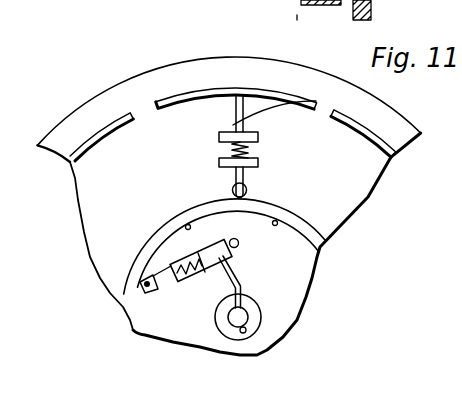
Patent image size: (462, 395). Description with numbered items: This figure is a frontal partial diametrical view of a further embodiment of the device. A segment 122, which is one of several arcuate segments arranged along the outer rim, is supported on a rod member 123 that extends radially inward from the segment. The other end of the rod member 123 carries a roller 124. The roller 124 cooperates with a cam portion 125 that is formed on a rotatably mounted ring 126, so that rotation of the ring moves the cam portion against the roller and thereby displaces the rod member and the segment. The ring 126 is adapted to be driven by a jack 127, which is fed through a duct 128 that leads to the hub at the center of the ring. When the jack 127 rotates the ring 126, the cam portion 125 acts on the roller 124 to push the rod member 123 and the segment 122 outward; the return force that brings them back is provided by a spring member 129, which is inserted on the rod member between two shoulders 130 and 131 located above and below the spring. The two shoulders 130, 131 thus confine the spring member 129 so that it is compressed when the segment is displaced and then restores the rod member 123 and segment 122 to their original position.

The segment 122 is at (247, 87).
The rod member 123 is at (299, 93).
The roller 124 is at (248, 186).
The cam portion 125 is at (167, 226).
The ring 126 is at (269, 210).
The jack 127 is at (210, 248).
The duct 128 is at (240, 278).
The spring member 129 is at (232, 150).
The shoulder 130 is at (259, 137).
The shoulder 131 is at (258, 163).